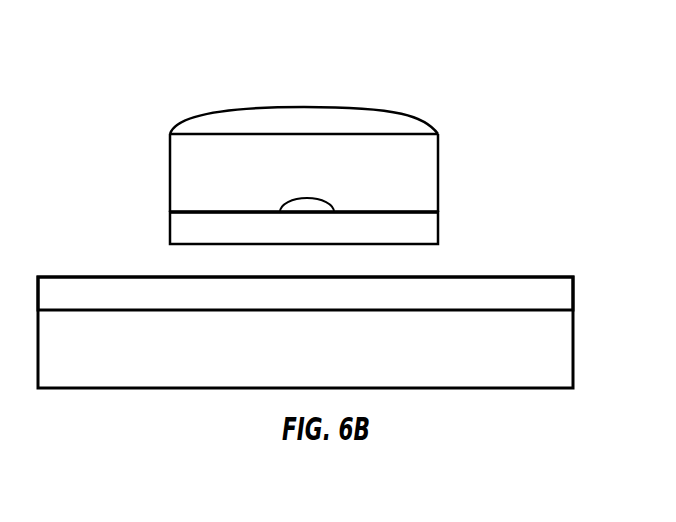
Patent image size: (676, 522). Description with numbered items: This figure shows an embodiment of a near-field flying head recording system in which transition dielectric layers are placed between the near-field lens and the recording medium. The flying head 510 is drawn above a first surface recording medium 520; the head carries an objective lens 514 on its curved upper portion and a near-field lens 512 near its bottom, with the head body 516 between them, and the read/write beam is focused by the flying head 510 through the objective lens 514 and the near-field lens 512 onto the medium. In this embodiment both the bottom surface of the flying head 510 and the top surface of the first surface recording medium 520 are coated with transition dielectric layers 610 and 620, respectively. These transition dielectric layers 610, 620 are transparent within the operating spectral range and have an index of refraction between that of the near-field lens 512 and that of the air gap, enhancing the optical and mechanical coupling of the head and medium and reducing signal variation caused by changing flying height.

The flying head 510 is at (304, 141).
The near-field lens 512 is at (332, 190).
The objective lens 514 is at (304, 103).
The lens body 516 is at (270, 173).
The transition dielectric layer 610 is at (338, 219).
The transition dielectric layer 620 is at (339, 285).
The first surface recording medium 520 is at (339, 324).